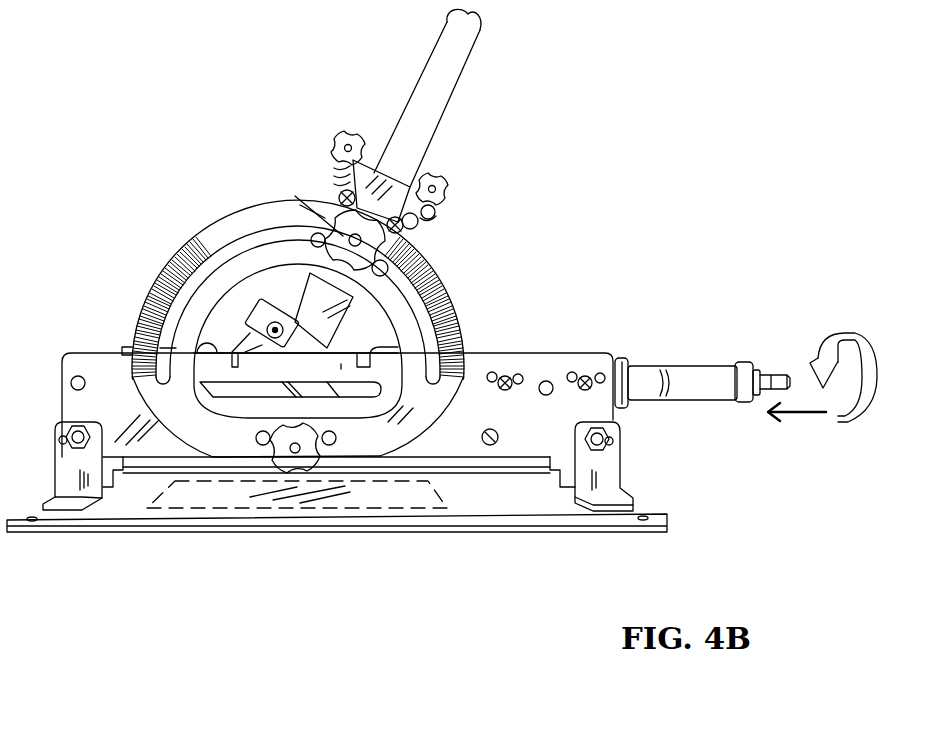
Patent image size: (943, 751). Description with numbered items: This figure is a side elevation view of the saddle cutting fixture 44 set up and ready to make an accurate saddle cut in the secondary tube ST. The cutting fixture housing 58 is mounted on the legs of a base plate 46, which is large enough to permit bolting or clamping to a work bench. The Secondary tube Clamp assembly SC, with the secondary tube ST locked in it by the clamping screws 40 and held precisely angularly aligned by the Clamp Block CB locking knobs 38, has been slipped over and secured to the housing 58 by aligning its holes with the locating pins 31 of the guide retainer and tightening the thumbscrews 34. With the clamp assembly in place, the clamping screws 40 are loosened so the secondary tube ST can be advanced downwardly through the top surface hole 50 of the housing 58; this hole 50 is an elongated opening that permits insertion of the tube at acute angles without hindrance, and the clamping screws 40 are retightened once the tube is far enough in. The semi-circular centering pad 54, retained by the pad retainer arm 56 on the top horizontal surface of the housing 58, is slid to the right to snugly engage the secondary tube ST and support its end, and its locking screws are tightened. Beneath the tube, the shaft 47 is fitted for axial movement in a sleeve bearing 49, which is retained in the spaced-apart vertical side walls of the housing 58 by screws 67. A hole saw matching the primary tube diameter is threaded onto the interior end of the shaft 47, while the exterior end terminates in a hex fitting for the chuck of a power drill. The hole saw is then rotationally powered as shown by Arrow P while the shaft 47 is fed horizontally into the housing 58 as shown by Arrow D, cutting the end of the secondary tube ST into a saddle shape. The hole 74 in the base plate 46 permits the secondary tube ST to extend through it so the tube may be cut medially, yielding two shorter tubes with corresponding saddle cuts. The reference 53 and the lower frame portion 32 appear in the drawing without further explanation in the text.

The saddle cutting fixture 44 is at (47, 263).
The Clamp Block locking knobs 38 is at (320, 218).
The clamping screws 40 is at (447, 185).
The secondary tube ST is at (457, 53).
The Clamp Block CB is at (307, 173).
The Secondary tube Clamp assembly SC is at (525, 243).
The pad retainer arm 56 is at (257, 308).
The centering pad 54 is at (322, 310).
The top surface hole 50 is at (341, 364).
The slot opening 53 is at (228, 387).
The screws 67 is at (586, 375).
The sleeve bearing 49 is at (626, 358).
The shaft 47 is at (705, 375).
The Arrow P is at (863, 343).
The Arrow D is at (803, 413).
The base plate 46 is at (128, 515).
The hole 74 is at (180, 512).
The locating pins 31 is at (373, 573).
The thumbscrews 34 is at (300, 468).
The lower frame portion 32 is at (407, 433).
The cutting fixture housing 58 is at (525, 440).